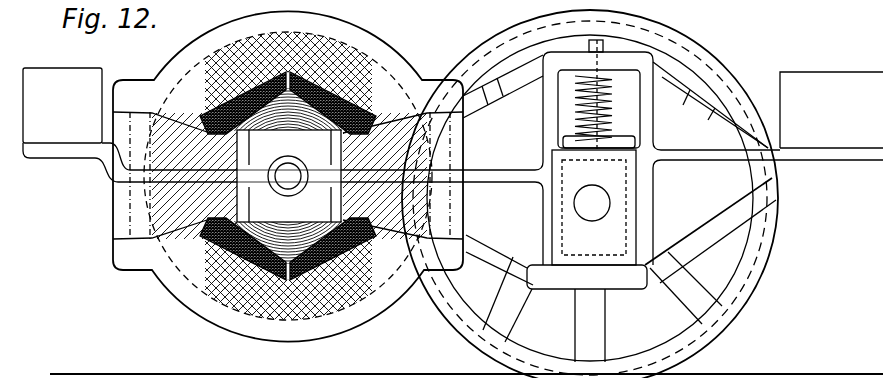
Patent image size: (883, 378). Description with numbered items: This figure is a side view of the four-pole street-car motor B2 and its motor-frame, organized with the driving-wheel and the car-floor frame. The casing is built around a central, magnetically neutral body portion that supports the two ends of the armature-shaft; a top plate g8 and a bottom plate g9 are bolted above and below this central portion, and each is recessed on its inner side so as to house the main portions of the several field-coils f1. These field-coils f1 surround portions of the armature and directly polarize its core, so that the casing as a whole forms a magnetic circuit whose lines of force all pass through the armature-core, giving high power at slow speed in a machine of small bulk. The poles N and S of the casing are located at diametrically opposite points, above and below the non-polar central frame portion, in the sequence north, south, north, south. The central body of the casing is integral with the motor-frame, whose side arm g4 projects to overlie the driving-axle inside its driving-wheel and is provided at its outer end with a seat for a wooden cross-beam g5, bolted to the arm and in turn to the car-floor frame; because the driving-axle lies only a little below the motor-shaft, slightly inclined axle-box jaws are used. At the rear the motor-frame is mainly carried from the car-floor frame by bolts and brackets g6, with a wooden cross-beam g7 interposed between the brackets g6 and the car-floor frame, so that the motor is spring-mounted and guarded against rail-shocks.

The four-pole motor B2 is at (502, 189).
The motor-frame side arm g4 is at (612, 164).
The front wooden cross-beam g5 is at (831, 110).
The brackets g6 is at (130, 165).
The rear wooden cross-beam g7 is at (62, 105).
The top plate g8 is at (288, 176).
The bottom plate g9 is at (290, 180).
The north pole N is at (270, 185).
The south pole S is at (317, 168).
The field-coil f1 is at (213, 100).
The lower pole shoe fx is at (278, 191).